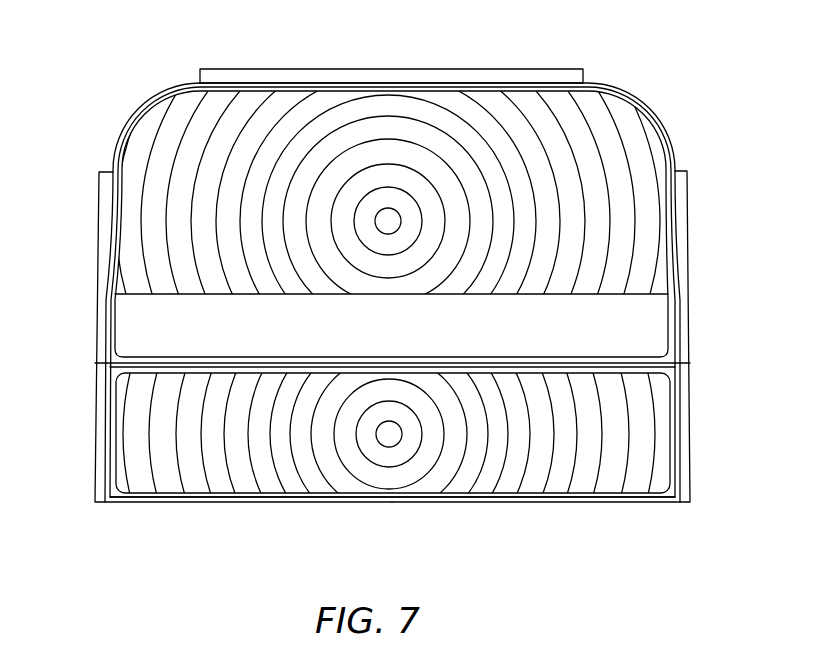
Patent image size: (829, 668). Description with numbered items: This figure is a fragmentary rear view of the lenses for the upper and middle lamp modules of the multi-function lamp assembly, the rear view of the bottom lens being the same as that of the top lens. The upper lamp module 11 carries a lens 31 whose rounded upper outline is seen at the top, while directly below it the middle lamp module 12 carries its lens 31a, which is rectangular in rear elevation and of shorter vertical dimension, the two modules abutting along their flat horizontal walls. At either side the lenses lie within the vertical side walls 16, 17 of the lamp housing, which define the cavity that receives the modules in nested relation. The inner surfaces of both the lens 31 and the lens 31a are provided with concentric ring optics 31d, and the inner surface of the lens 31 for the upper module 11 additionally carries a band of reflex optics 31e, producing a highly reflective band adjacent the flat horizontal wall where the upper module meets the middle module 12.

The upper lamp module 11 is at (650, 159).
The middle lamp module 12 is at (660, 456).
The side wall 16 is at (680, 268).
The side wall 17 is at (100, 396).
The lens 31 is at (638, 112).
The lens of the center module 31a is at (677, 476).
The ring optics 31d is at (478, 112).
The band of reflex optics 31e is at (655, 328).